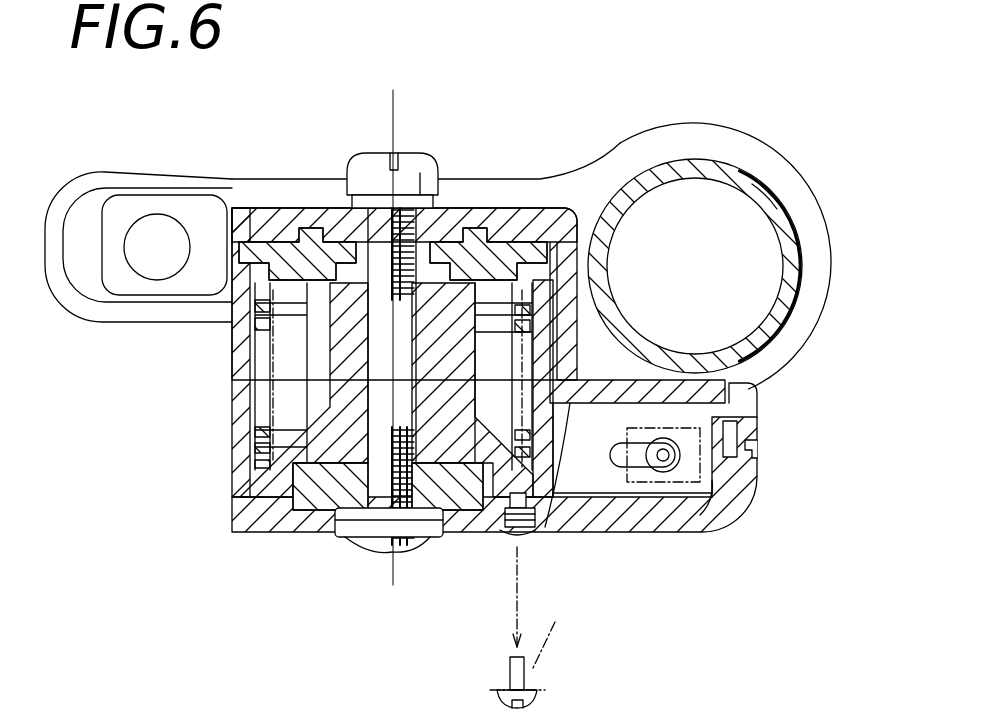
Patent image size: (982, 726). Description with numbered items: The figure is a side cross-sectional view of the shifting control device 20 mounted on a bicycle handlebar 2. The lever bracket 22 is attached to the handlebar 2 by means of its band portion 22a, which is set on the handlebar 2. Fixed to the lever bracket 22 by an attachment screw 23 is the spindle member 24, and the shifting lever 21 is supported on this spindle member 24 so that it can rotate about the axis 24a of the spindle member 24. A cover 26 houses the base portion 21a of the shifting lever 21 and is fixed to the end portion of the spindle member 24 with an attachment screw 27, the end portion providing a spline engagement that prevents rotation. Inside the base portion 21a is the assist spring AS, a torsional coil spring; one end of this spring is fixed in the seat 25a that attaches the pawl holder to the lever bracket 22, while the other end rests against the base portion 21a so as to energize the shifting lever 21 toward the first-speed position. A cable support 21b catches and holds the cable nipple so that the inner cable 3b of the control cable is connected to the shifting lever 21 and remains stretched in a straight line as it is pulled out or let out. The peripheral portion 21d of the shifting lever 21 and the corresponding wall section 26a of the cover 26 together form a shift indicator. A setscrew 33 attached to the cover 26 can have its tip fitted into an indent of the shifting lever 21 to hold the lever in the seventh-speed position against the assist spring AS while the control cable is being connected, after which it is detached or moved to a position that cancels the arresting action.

The handlebar 2 is at (685, 170).
The inner cable 3b is at (663, 462).
The shifting control device 20 is at (216, 513).
The shifting lever 21 is at (593, 493).
The base portion 21a is at (242, 397).
The cable support 21b is at (712, 512).
The peripheral portion 21d is at (759, 407).
The lever bracket 22 is at (198, 182).
The band portion 22a is at (808, 317).
The attachment screw 23 is at (372, 165).
The spindle member 24 is at (320, 343).
The axis 24a is at (397, 132).
The seat 25a is at (275, 255).
The cover 26 is at (296, 520).
The wall section 26a is at (742, 455).
The attachment screw 27 is at (415, 540).
The setscrew 33 is at (527, 541).
The assist spring AS is at (250, 453).